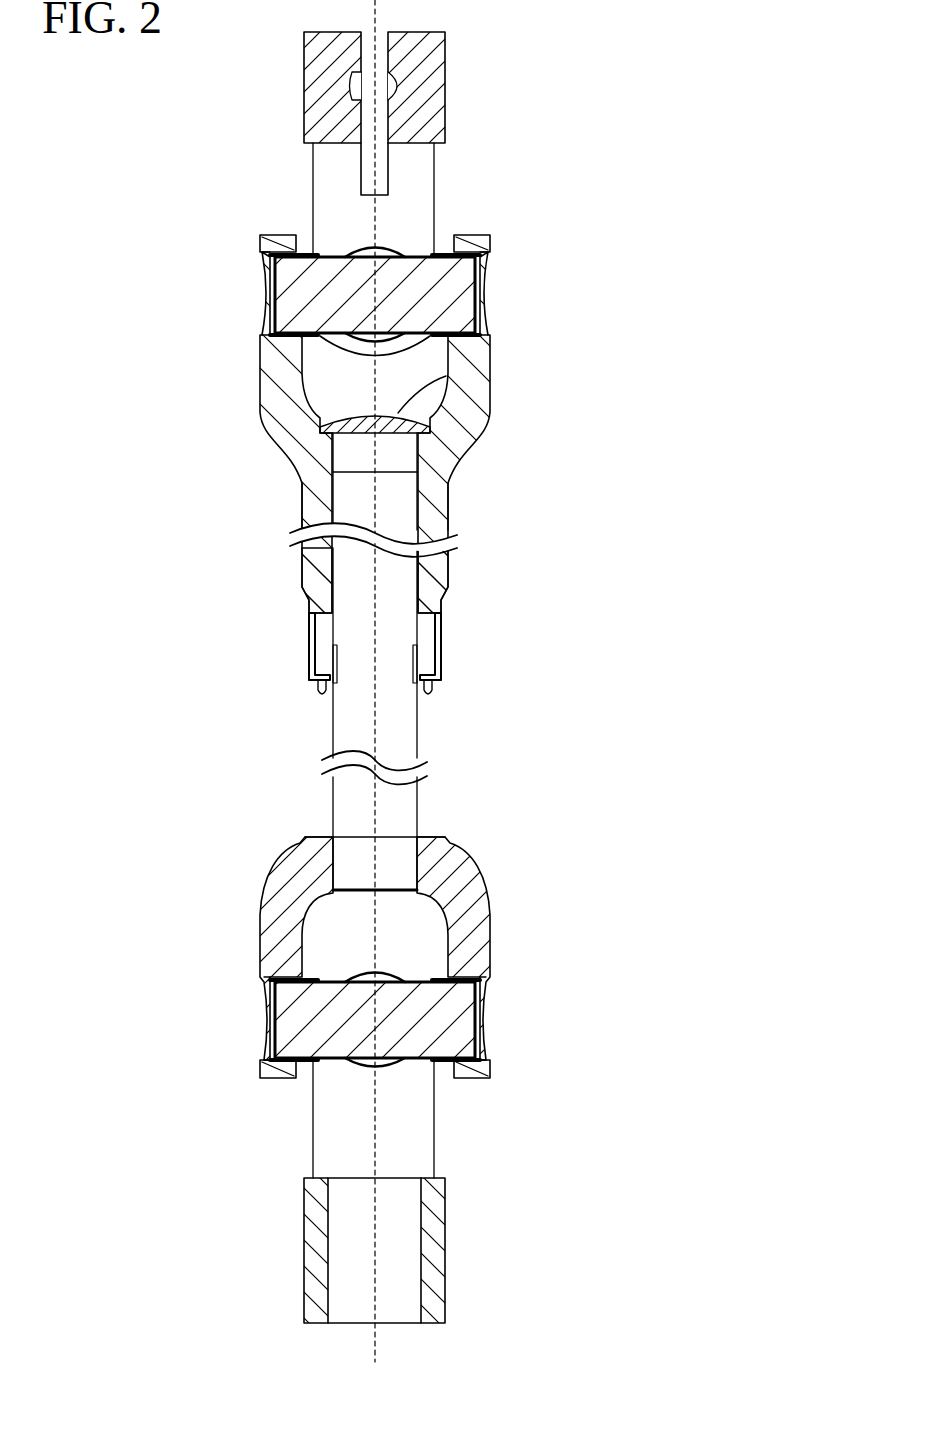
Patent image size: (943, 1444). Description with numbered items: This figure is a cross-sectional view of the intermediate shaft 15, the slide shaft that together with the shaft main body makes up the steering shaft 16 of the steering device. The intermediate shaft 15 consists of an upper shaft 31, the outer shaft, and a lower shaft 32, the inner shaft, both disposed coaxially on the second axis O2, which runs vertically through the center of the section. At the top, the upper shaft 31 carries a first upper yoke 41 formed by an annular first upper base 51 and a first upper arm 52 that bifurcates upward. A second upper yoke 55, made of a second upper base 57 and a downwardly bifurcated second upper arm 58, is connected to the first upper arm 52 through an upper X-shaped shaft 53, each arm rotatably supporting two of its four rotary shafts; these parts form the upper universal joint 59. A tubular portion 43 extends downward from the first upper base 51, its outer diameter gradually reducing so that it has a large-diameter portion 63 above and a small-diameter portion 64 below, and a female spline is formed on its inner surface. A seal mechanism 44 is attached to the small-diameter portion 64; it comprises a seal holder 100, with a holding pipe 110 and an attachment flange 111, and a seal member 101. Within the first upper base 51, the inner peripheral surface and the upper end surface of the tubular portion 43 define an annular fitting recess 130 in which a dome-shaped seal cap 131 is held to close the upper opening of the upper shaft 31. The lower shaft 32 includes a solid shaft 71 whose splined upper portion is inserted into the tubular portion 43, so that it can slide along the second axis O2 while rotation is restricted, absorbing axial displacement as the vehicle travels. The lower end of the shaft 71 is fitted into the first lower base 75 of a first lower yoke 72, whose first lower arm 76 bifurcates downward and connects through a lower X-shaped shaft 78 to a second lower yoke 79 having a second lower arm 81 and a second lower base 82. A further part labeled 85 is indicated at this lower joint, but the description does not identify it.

The intermediate shaft 15 is at (334, 682).
The steering shaft 16 is at (362, 682).
The upper shaft 31 is at (362, 424).
The lower shaft 32 is at (363, 982).
The first upper yoke 41 is at (303, 424).
The tubular portion 43 is at (446, 614).
The seal mechanism 44 is at (292, 664).
The first upper base 51 is at (288, 438).
The first upper arm 52 is at (276, 380).
The upper X-shaped shaft 53 is at (272, 290).
The second upper yoke 55 is at (447, 142).
The second upper base 57 is at (433, 86).
The second upper arm 58 is at (422, 198).
The upper universal joint 59 is at (500, 293).
The large-diameter portion 63 is at (433, 566).
The small-diameter portion 64 is at (421, 646).
The shaft 71 is at (407, 727).
The first lower yoke 72 is at (304, 952).
The first lower base 75 is at (303, 841).
The first lower arm 76 is at (332, 1003).
The lower X-shaped shaft 78 is at (463, 1020).
The second lower yoke 79 is at (447, 1192).
The second lower arm 81 is at (424, 1118).
The second lower base 82 is at (417, 1250).
The bearing 85 is at (243, 1073).
The seal holder 100 is at (292, 629).
The seal member 101 is at (326, 692).
The holding pipe 110 is at (310, 638).
The attachment flange 111 is at (312, 662).
The fitting recess 130 is at (433, 422).
The seal cap 131 is at (463, 384).
The second axis O2 is at (380, 1349).